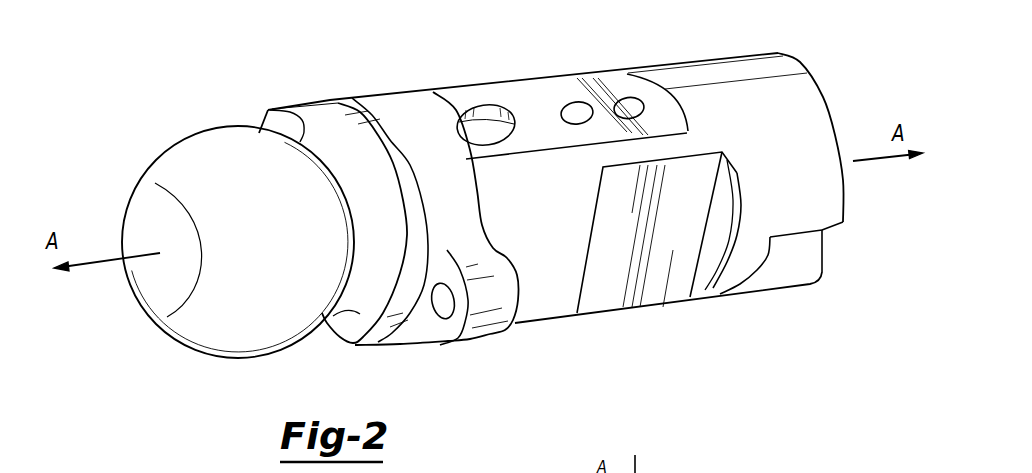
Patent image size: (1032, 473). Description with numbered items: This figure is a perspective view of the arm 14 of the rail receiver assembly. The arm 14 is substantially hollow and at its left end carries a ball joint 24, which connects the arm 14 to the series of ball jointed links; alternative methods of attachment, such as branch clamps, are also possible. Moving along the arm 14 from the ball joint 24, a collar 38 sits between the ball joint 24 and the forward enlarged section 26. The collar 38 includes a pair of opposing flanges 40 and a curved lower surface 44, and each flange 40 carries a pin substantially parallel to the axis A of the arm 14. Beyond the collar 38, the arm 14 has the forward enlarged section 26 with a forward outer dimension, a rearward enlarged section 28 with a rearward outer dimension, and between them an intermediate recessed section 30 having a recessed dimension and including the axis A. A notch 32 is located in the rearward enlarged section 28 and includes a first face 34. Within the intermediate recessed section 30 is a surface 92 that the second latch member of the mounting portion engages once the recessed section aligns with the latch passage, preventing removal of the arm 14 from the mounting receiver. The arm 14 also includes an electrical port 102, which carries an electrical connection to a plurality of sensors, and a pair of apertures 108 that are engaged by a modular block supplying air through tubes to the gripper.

The arm 14 is at (505, 53).
The ball joint 24 is at (200, 130).
The forward enlarged section 26 is at (547, 320).
The rearward enlarged section 28 is at (693, 67).
The intermediate recessed section 30 is at (610, 313).
The notch 32 is at (795, 272).
The first face 34 is at (797, 248).
The collar 38 is at (398, 92).
The flange 40 is at (268, 109).
The curved lower surface 44 is at (353, 346).
The surface 92 is at (714, 292).
The electrical port 102 is at (478, 125).
The apertures 108 is at (573, 105).